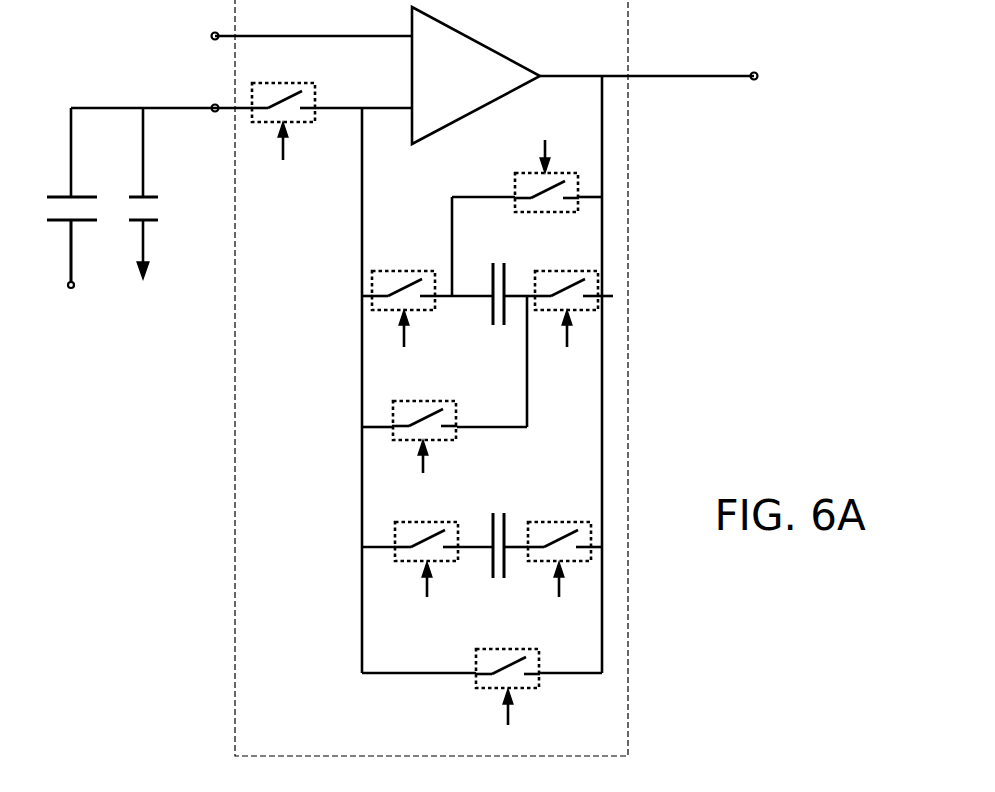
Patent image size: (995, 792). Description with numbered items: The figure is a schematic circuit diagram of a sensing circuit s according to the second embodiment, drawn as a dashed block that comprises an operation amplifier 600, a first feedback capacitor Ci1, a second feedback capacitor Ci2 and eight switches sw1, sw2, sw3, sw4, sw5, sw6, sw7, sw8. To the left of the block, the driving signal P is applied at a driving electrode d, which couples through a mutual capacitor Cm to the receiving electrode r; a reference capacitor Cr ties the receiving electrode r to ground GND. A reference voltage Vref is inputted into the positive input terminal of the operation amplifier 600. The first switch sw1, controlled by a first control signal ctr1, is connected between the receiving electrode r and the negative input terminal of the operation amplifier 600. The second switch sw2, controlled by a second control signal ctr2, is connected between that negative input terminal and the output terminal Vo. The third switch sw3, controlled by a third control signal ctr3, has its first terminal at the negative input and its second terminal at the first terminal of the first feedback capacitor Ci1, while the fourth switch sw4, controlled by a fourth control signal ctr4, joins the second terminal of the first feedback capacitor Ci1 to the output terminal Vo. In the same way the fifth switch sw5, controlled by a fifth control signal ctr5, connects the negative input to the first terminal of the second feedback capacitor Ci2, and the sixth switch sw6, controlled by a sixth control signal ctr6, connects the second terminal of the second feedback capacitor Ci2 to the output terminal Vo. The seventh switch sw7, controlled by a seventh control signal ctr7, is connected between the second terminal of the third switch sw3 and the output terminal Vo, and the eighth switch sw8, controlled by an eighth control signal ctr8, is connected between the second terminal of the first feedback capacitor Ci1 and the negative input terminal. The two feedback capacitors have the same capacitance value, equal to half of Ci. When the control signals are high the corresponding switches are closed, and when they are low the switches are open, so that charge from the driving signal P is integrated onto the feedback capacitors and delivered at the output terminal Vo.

The operation amplifier 600 is at (493, 60).
The sensing circuit s is at (243, 563).
The reference voltage Vref is at (212, 22).
The output terminal Vo is at (760, 58).
The receiving electrode r is at (92, 106).
The driving electrode d is at (70, 242).
The driving signal P is at (71, 307).
The mutual capacitor Cm is at (83, 193).
The reference capacitor Cr is at (159, 216).
The ground GND is at (153, 265).
The first feedback capacitor Ci1 is at (493, 310).
The second feedback capacitor Ci2 is at (498, 560).
The first switch sw1 is at (283, 92).
The second switch sw2 is at (533, 685).
The third switch sw3 is at (380, 271).
The fourth switch sw4 is at (548, 271).
The fifth switch sw5 is at (430, 522).
The sixth switch sw6 is at (543, 522).
The seventh switch sw7 is at (522, 182).
The eighth switch sw8 is at (393, 433).
The first control signal ctr1 is at (286, 154).
The second control signal ctr2 is at (508, 720).
The third control signal ctr3 is at (404, 342).
The fourth control signal ctr4 is at (567, 342).
The fifth control signal ctr5 is at (427, 593).
The sixth control signal ctr6 is at (559, 593).
The seventh control signal ctr7 is at (545, 144).
The eighth control signal ctr8 is at (423, 470).